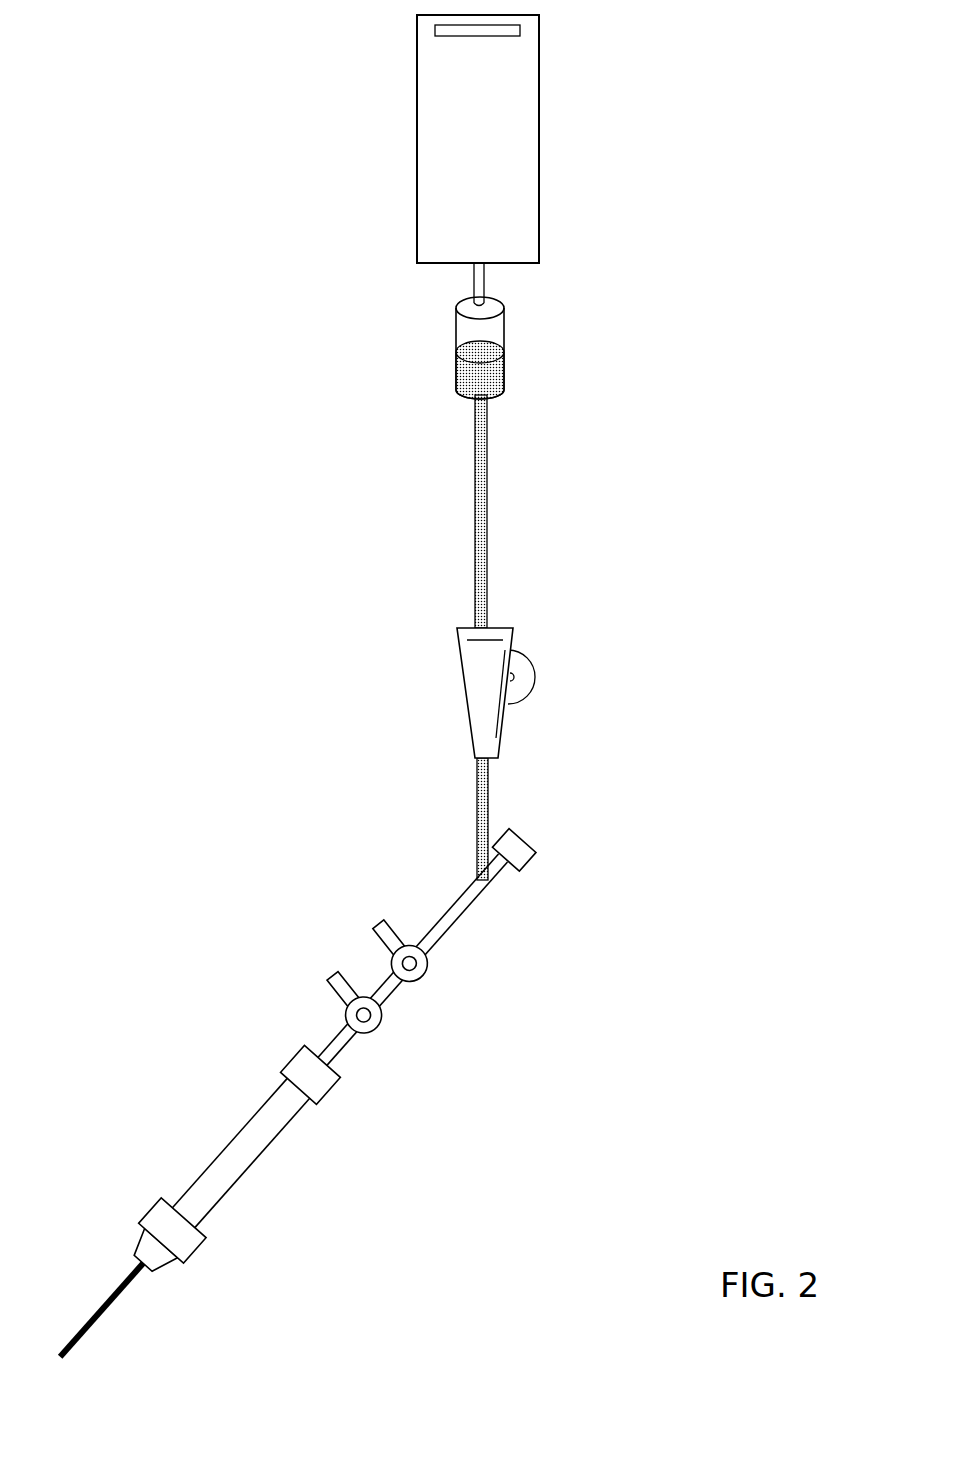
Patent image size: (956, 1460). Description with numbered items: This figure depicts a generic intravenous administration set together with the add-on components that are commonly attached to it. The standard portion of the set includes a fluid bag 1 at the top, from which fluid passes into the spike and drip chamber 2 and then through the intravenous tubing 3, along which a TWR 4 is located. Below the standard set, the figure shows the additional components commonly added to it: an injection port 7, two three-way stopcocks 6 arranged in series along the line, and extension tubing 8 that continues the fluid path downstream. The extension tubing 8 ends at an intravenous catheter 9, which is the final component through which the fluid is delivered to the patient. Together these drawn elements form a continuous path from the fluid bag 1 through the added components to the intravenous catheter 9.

The fluid bag 1 is at (553, 132).
The spike and drip chamber 2 is at (553, 339).
The intravenous tubing 3 is at (492, 498).
The TWR 4 is at (542, 717).
The three-way stopcock 6 is at (357, 949).
The injection port 7 is at (555, 851).
The extension tubing 8 is at (298, 1132).
The intravenous catheter 9 is at (142, 1303).